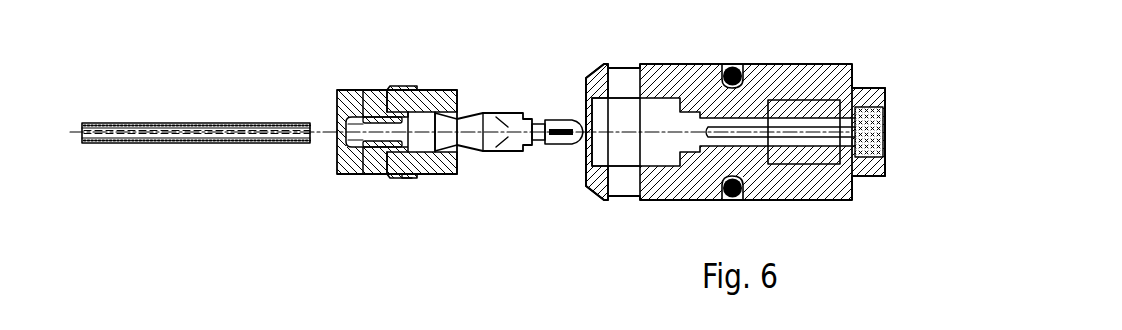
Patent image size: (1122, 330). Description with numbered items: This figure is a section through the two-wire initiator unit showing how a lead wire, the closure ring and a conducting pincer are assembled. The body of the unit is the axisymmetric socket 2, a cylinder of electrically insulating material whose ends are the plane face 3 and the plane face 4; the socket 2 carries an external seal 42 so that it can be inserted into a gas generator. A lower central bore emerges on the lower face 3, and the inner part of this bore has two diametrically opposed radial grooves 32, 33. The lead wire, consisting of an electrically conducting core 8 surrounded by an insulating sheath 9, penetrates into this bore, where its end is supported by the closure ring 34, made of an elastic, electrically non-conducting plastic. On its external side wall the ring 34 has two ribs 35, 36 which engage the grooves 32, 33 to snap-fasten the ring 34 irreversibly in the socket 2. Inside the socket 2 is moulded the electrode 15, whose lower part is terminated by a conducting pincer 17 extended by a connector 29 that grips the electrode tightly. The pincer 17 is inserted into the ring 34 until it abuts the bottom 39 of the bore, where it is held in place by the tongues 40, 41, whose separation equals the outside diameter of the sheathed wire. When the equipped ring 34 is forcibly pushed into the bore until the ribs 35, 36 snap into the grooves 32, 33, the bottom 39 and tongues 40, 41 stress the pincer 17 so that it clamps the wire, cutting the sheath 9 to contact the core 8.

The socket 2 is at (782, 82).
The lower plane face 3 is at (586, 178).
The plane face 4 is at (887, 103).
The electrically conducting core 8 is at (157, 130).
The insulating sheath 9 is at (212, 125).
The electrode 15 is at (818, 132).
The conducting pincer 17 is at (522, 115).
The connector 29 is at (560, 118).
The radial groove 32 is at (620, 85).
The radial groove 33 is at (625, 186).
The closure ring 34 is at (343, 177).
The rib 35 is at (400, 86).
The rib 36 is at (396, 178).
The bottom 39 is at (340, 152).
The tongue 40 is at (410, 176).
The tongue 41 is at (367, 103).
The external seal 42 is at (740, 67).